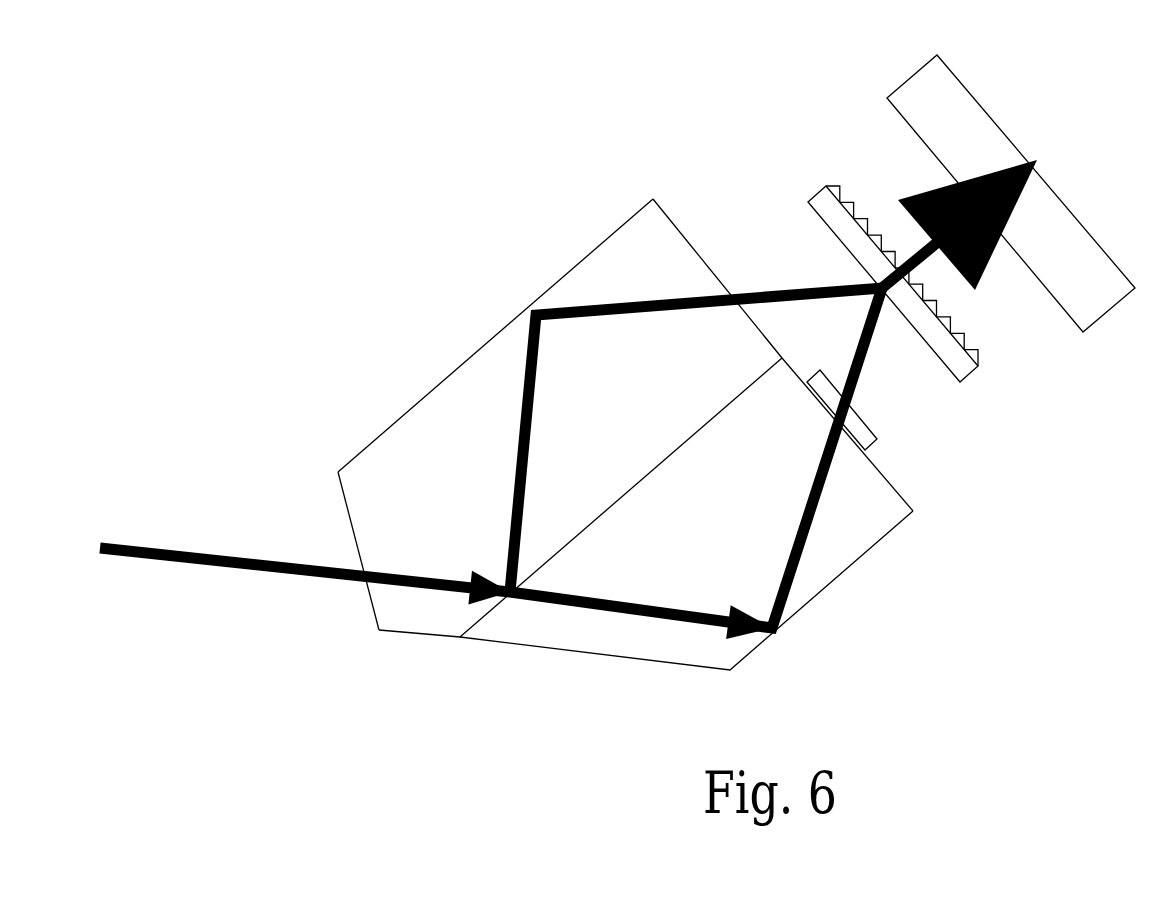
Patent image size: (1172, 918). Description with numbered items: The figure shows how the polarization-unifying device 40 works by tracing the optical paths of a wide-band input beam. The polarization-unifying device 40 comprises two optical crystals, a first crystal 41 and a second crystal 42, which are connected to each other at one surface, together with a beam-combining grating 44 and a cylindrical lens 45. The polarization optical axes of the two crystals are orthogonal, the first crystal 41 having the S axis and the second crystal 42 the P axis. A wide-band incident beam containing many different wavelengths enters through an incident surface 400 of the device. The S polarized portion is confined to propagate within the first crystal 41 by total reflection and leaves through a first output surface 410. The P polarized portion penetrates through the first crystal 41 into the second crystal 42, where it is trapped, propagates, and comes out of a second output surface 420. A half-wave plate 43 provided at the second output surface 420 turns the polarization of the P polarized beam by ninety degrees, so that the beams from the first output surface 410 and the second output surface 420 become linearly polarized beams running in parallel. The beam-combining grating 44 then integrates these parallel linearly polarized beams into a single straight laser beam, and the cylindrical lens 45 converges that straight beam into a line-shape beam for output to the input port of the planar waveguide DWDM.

The polarization-unifying device 40 is at (668, 451).
The first crystal 41 is at (506, 438).
The second crystal 42 is at (783, 451).
The incident surface 400 is at (355, 608).
The first output surface 410 is at (697, 240).
The second output surface 420 is at (912, 494).
The half-wave plate 43 is at (860, 437).
The beam-combining grating 44 is at (818, 188).
The cylindrical lens 45 is at (1002, 122).